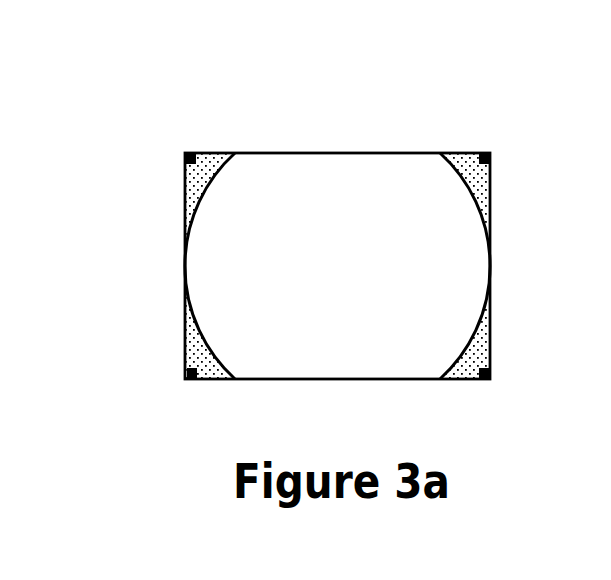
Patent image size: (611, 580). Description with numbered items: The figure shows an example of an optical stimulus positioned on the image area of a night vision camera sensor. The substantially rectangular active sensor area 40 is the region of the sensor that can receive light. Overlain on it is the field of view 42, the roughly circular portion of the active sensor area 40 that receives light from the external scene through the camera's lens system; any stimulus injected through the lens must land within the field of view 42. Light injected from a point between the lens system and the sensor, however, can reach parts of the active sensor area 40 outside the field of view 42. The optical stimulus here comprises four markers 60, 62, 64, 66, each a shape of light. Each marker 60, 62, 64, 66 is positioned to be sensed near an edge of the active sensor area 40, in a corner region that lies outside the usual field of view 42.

The active sensor area 40 is at (481, 181).
The field of view 42 is at (338, 185).
The marker 60 is at (185, 155).
The marker 62 is at (483, 153).
The marker 64 is at (480, 380).
The marker 66 is at (191, 380).